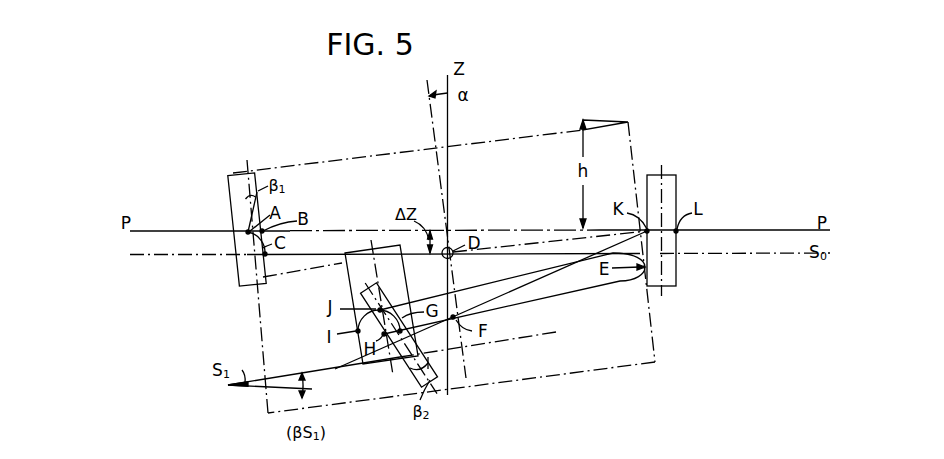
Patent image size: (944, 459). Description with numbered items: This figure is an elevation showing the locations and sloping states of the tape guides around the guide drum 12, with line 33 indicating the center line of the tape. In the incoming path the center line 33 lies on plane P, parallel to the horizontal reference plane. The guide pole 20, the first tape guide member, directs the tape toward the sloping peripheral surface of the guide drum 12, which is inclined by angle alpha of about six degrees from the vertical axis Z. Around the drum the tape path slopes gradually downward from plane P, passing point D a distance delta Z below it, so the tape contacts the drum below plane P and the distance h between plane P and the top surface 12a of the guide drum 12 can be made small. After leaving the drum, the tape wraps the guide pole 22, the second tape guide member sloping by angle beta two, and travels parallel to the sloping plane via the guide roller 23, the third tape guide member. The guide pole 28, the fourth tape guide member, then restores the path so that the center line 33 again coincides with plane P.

The guide drum 12 is at (565, 135).
The top surface of the guide drum 12a is at (500, 133).
The guide pole 20 is at (244, 200).
The guide pole 22 is at (402, 366).
The guide roller 23 is at (379, 246).
The guide pole 28 is at (672, 188).
The center line of the tape 33 is at (180, 229).